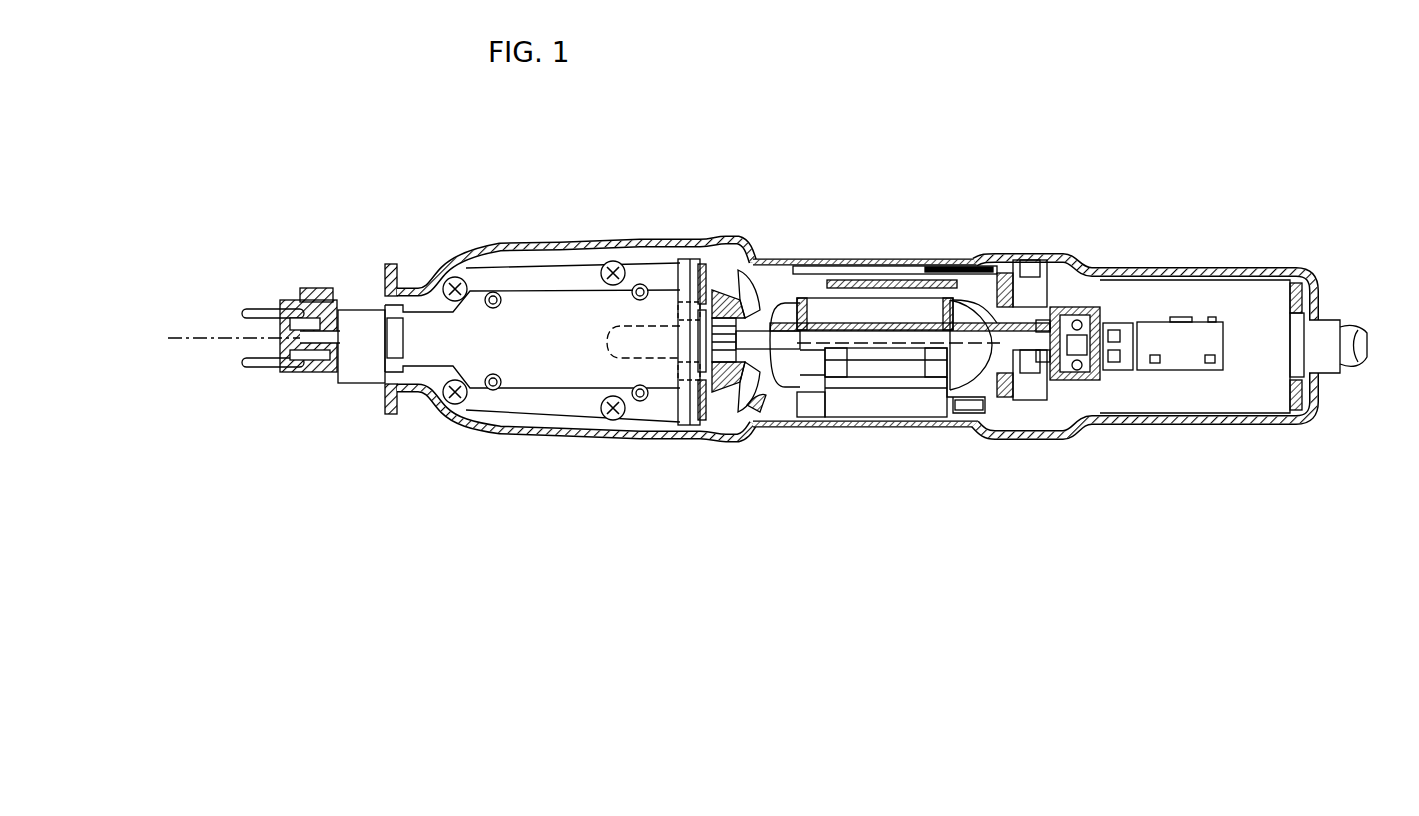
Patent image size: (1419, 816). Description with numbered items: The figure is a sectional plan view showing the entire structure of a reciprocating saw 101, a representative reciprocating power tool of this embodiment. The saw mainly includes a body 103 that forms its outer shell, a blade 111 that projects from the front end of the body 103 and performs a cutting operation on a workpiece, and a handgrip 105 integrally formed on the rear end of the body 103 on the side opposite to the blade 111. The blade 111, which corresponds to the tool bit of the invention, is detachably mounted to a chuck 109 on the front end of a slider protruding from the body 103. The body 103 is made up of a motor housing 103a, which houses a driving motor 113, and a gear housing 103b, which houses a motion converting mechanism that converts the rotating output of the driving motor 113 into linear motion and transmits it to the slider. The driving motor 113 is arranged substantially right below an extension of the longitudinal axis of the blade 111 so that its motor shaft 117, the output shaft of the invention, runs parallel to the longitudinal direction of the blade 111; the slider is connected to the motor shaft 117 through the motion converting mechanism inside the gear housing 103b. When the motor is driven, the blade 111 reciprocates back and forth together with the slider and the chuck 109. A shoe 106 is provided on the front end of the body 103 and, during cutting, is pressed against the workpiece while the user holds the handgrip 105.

The reciprocating saw 101 is at (1210, 212).
The body 103 is at (958, 255).
The motor housing 103a is at (810, 258).
The gear housing 103b is at (552, 249).
The handgrip 105 is at (1121, 264).
The shoe 106 is at (258, 308).
The chuck 109 is at (306, 376).
The blade 111 is at (186, 350).
The driving motor 113 is at (787, 394).
The motor shaft 117 is at (768, 258).